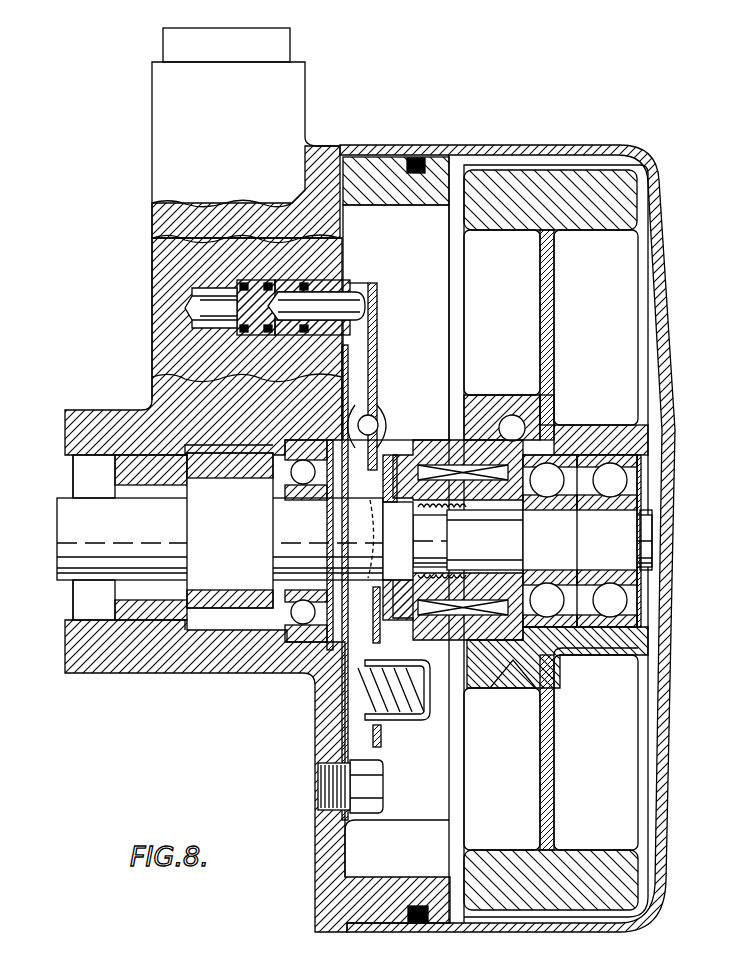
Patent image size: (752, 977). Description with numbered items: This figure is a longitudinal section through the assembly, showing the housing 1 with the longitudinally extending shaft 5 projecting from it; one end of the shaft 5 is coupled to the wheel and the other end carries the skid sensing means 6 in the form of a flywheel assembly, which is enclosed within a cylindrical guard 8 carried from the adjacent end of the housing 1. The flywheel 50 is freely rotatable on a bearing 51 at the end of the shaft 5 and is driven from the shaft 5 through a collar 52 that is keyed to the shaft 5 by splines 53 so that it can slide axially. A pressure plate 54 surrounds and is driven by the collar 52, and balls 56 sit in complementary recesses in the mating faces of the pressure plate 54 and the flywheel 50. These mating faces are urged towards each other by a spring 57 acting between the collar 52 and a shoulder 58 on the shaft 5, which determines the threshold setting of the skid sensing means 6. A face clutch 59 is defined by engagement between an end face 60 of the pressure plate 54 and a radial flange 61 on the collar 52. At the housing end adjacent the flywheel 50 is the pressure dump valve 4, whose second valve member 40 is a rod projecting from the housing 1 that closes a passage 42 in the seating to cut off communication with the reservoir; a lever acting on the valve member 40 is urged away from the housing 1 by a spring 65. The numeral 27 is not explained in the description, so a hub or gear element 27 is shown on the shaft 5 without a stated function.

The housing 1 is at (325, 848).
The pressure dump valve 4 is at (343, 300).
The shaft 5 is at (143, 563).
The skid sensing means 6 is at (537, 428).
The cylindrical guard 8 is at (497, 147).
The gear hub 27 is at (250, 555).
The second valve member 40 is at (372, 301).
The passage 42 is at (248, 326).
The flywheel 50 is at (598, 186).
The bearing 51 is at (548, 595).
The collar 52 is at (500, 490).
The splines 53 is at (560, 660).
The pressure plate 54 is at (513, 665).
The balls 56 is at (507, 418).
The spring 57 is at (440, 508).
The shoulder 58 is at (385, 562).
The face clutch 59 is at (345, 688).
The end face 60 is at (440, 642).
The radial flange 61 is at (330, 658).
The spring 65 is at (408, 718).